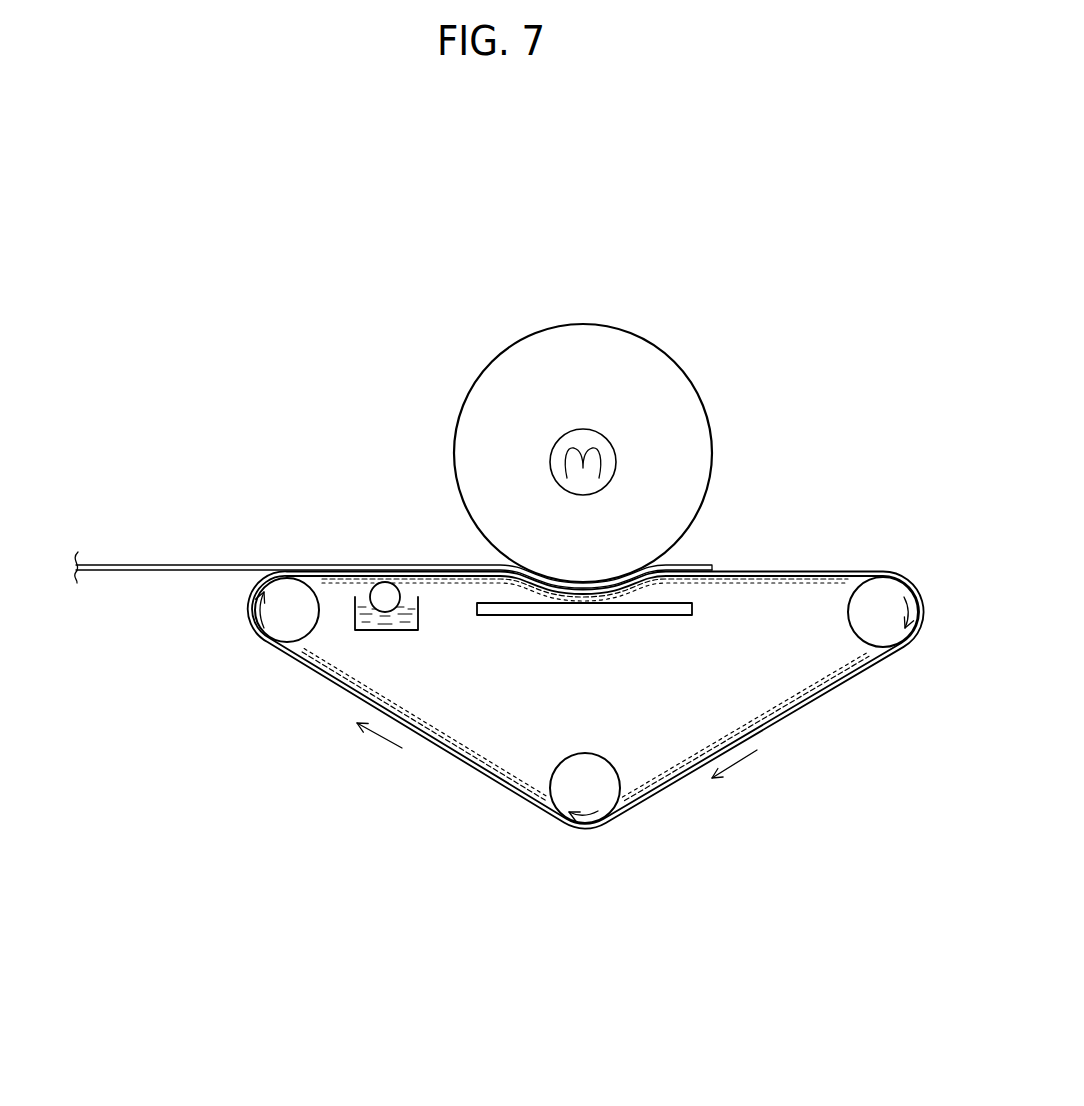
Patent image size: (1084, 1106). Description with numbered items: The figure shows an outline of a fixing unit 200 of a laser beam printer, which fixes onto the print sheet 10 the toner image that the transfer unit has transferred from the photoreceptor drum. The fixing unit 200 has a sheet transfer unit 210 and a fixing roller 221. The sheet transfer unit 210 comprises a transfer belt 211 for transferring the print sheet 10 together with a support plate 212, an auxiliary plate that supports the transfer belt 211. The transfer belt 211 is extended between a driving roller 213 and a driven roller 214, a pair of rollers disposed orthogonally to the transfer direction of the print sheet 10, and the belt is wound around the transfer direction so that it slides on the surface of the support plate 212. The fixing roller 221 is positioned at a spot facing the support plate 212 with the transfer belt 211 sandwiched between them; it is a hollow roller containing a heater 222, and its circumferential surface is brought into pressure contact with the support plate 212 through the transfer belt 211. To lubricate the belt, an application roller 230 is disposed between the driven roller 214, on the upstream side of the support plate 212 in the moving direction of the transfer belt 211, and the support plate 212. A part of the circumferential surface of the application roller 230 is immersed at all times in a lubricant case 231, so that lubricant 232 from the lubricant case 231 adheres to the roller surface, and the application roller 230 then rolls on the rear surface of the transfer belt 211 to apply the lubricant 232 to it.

The print sheet 10 is at (195, 563).
The fixing unit 200 is at (850, 340).
The sheet transfer unit 210 is at (442, 857).
The transfer belt 211 is at (782, 721).
The support plate 212 is at (625, 616).
The driving roller 213 is at (848, 620).
The driven roller 214 is at (313, 640).
The fixing roller 221 is at (709, 425).
The heater 222 is at (584, 430).
The application roller 230 is at (388, 588).
The lubricant case 231 is at (410, 631).
The lubricant 232 is at (455, 604).